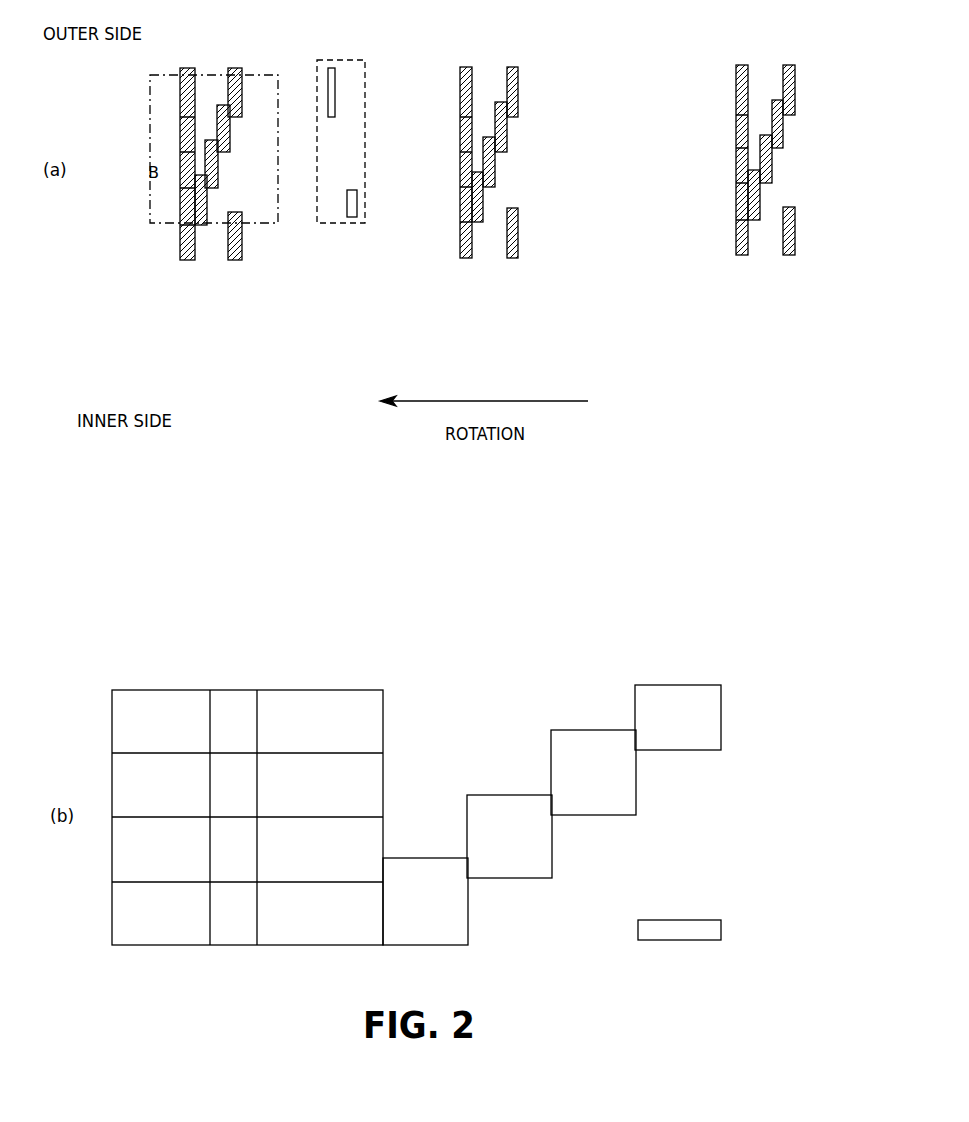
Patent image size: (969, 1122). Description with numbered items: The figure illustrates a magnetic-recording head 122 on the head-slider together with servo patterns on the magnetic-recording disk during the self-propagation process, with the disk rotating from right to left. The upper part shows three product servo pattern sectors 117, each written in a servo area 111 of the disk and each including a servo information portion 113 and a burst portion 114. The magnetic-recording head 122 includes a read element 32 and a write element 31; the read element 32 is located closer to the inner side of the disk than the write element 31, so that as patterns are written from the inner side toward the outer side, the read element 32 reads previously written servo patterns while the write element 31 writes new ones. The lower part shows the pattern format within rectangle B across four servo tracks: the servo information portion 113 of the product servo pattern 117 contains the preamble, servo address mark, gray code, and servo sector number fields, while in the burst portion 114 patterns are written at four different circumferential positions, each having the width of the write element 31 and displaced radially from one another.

The write element 31 is at (335, 95).
The read element 32 is at (345, 220).
The magnetic-recording head 122 is at (366, 172).
The servo area 111 is at (460, 270).
The servo information portion 113 is at (185, 262).
The burst portion 114 is at (197, 282).
The product servo pattern sector 117 is at (148, 348).